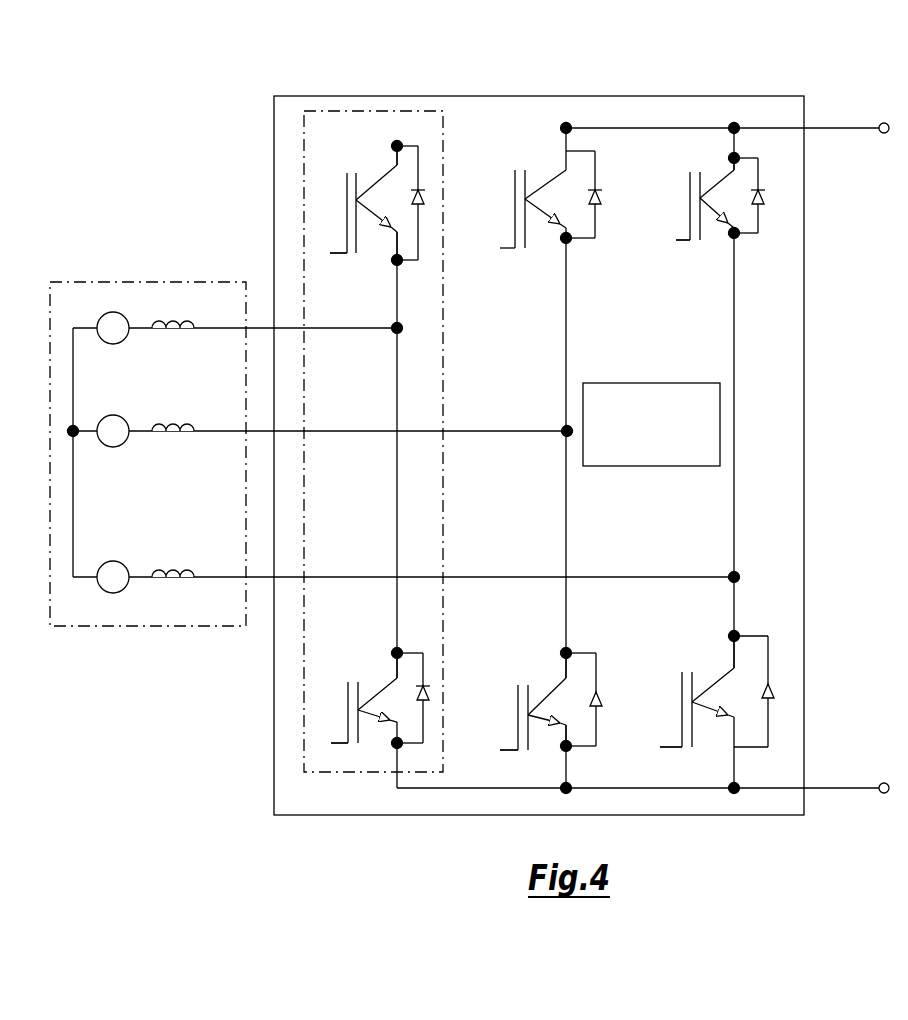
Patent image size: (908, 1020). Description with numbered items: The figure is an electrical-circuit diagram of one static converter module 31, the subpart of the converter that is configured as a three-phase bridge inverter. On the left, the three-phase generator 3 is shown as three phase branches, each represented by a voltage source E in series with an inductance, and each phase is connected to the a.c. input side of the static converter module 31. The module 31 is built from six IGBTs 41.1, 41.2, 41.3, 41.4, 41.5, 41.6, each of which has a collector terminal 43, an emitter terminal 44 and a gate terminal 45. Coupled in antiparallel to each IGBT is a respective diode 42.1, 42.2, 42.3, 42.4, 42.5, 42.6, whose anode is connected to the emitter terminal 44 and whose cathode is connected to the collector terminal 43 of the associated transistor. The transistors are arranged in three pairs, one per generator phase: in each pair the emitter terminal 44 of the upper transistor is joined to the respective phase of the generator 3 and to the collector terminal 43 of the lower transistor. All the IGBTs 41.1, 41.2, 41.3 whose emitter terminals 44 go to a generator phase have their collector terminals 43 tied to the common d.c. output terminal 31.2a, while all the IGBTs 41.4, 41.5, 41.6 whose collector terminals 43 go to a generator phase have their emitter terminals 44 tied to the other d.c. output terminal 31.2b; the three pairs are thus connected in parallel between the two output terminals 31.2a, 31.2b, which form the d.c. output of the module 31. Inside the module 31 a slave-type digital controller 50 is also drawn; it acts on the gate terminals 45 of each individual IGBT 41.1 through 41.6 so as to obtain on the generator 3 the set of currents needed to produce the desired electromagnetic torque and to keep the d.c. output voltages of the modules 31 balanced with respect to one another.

The generator 3 is at (392, 483).
The phase voltage source E is at (403, 445).
The static converter module 31 is at (802, 292).
The d.c. output terminal 31.2a is at (845, 124).
The d.c. output terminal 31.2b is at (849, 784).
The IGBT 41.1 is at (366, 272).
The IGBT 41.2 is at (542, 257).
The IGBT 41.3 is at (717, 244).
The IGBT 41.4 is at (371, 761).
The IGBT 41.5 is at (553, 756).
The IGBT 41.6 is at (720, 746).
The diode 42.1 is at (452, 186).
The diode 42.2 is at (600, 197).
The diode 42.3 is at (762, 196).
The diode 42.4 is at (430, 690).
The diode 42.5 is at (600, 698).
The diode 42.6 is at (772, 680).
The collector terminal 43 is at (386, 175).
The emitter terminal 44 is at (397, 246).
The gate terminal 45 is at (331, 253).
The slave digital controller 50 is at (680, 440).